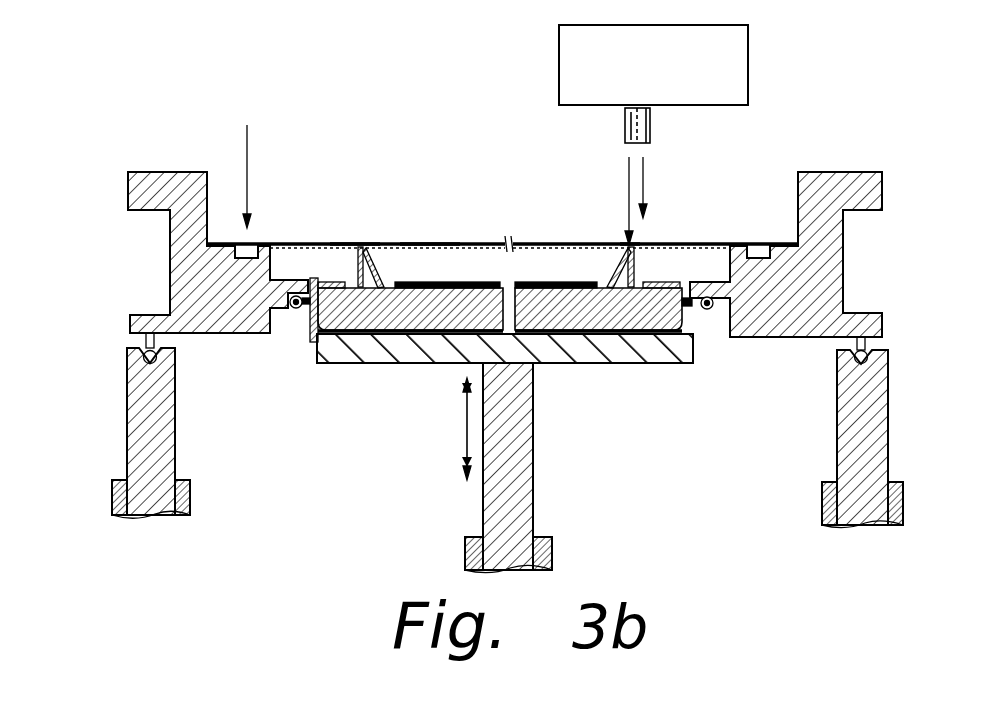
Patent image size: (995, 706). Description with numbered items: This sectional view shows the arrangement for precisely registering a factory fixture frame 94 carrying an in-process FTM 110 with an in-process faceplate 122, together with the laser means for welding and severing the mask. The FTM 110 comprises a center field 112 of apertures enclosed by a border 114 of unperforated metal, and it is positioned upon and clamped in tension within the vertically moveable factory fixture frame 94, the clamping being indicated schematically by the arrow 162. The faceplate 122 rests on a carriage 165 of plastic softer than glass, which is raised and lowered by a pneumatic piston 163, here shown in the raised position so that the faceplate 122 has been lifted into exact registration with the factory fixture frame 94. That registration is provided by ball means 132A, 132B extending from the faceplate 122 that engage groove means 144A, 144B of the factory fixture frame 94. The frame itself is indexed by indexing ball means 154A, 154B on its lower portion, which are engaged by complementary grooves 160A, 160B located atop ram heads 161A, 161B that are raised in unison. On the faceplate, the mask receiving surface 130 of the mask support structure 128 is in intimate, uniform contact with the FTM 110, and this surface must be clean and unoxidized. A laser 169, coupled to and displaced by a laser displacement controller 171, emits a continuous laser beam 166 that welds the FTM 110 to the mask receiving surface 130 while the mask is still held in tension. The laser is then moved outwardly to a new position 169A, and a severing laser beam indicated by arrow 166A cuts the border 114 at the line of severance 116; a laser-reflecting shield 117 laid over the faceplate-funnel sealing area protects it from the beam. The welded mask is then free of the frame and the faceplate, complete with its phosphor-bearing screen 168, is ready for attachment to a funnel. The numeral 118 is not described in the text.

The factory fixture frame 94 is at (167, 170).
The arrow indicating clamping 162 is at (248, 150).
The in-process FTM 110 is at (361, 244).
The border of unperforated metal 114 is at (428, 242).
The center field of apertures 112 is at (481, 242).
The mask support structure 128 is at (340, 244).
The groove means 144A is at (293, 280).
The groove means 144B is at (707, 280).
The mask receiving surface 130 is at (372, 252).
The phosphor-bearing screen 168 is at (457, 280).
The laser target spot 118 is at (625, 243).
The continuous laser beam 166 is at (628, 178).
The severing laser beam arrow 166A is at (645, 172).
The laser 169 is at (622, 130).
The new position of the laser 169A is at (650, 125).
The laser displacement controller 171 is at (750, 60).
The line of severance 116 is at (668, 245).
The shield 117 is at (658, 261).
The indexing ball means 154A is at (145, 349).
The groove 160A is at (143, 363).
The ram head 161A is at (127, 429).
The ball means 132A is at (294, 310).
The in-process faceplate 122 is at (325, 332).
The carriage 165 is at (388, 365).
The pneumatic piston 163 is at (483, 510).
The indexing ball means 154B is at (855, 343).
The groove 160B is at (854, 365).
The ram head 161B is at (837, 439).
The ball means 132B is at (711, 312).